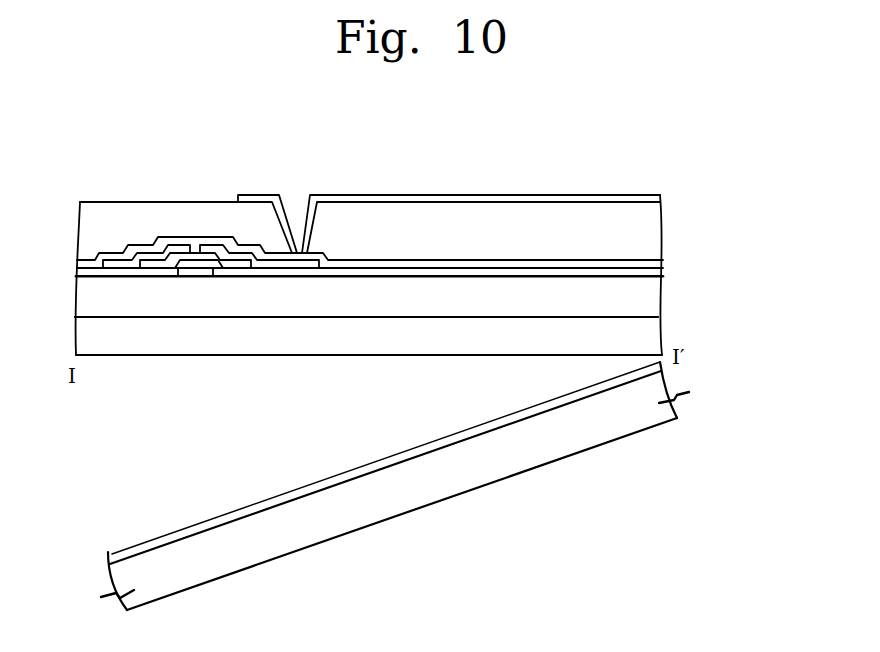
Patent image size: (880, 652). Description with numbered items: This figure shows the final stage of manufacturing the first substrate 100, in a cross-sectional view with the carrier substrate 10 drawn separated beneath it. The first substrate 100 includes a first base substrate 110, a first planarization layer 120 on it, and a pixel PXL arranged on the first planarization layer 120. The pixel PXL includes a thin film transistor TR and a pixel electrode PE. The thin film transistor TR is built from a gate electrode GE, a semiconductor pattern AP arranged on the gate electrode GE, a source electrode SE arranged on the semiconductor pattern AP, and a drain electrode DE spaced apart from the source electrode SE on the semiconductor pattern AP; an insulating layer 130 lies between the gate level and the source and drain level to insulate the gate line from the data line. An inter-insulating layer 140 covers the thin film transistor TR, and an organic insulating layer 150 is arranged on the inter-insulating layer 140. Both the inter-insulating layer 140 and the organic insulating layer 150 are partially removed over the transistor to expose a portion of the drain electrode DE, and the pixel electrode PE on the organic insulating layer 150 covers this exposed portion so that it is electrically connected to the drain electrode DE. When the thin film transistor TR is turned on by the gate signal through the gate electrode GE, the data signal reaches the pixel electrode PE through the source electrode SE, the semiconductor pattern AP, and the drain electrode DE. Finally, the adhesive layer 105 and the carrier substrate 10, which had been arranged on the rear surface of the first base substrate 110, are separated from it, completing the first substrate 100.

The carrier substrate 10 is at (678, 412).
The adhesive layer 105 is at (117, 551).
The first substrate 100 is at (743, 200).
The first base substrate 110 is at (650, 328).
The first planarization layer 120 is at (650, 302).
The insulating layer 130 is at (652, 272).
The inter-insulating layer 140 is at (652, 265).
The organic insulating layer 150 is at (650, 215).
The pixel PXL is at (381, 344).
The thin film transistor TR is at (211, 349).
The gate electrode GE is at (194, 273).
The semiconductor pattern AP is at (156, 265).
The source electrode SE is at (127, 265).
The drain electrode DE is at (235, 257).
The pixel electrode PE is at (292, 258).